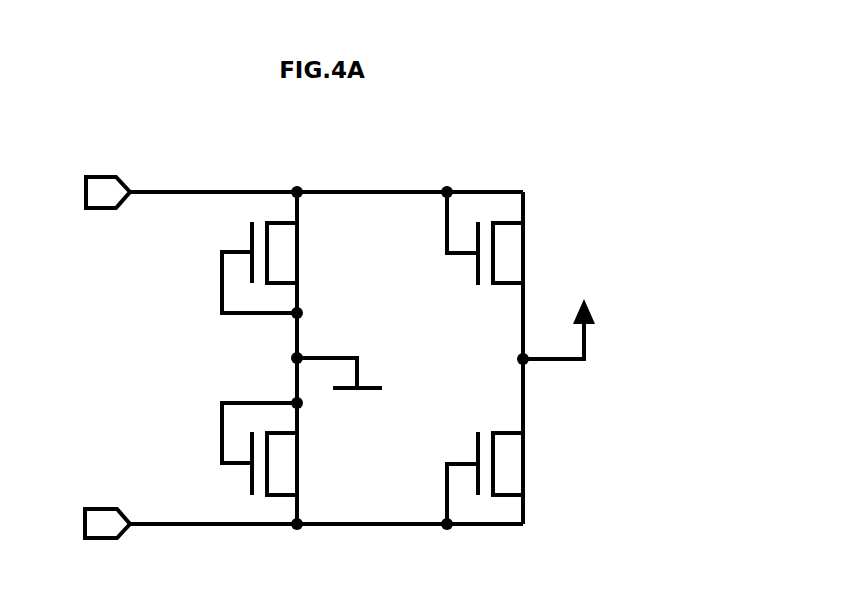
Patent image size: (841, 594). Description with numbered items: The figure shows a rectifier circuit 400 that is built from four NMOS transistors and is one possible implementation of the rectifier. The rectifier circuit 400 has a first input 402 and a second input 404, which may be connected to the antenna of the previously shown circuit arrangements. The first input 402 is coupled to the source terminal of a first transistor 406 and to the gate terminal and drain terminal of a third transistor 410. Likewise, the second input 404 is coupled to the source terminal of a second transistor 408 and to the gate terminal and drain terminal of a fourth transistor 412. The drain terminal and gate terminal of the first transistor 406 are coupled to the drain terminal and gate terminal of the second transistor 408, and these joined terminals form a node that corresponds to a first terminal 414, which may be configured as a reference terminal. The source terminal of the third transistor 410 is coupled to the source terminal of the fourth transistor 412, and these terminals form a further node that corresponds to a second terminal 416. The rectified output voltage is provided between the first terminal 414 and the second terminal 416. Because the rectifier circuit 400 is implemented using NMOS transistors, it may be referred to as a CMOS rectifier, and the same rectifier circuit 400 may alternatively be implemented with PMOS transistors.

The rectifier circuit 400 is at (658, 160).
The first input 402 is at (102, 170).
The second input 404 is at (102, 498).
The first transistor 406 is at (300, 245).
The second transistor 408 is at (300, 462).
The third transistor 410 is at (513, 246).
The fourth transistor 412 is at (528, 462).
The first terminal 414 is at (357, 393).
The second terminal 416 is at (573, 365).